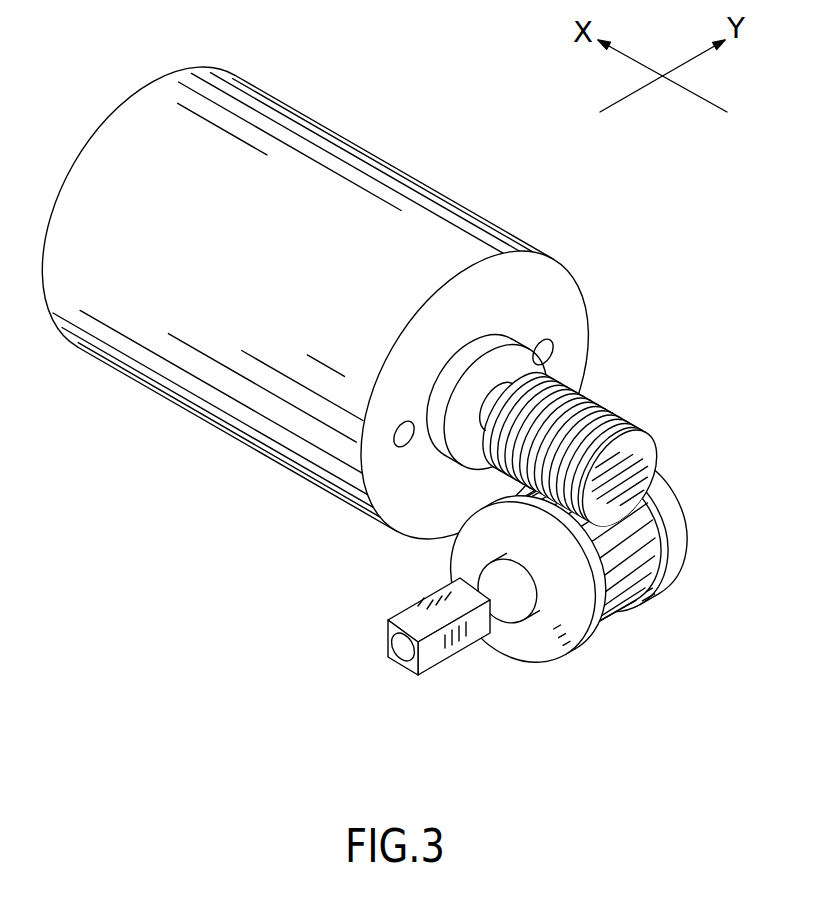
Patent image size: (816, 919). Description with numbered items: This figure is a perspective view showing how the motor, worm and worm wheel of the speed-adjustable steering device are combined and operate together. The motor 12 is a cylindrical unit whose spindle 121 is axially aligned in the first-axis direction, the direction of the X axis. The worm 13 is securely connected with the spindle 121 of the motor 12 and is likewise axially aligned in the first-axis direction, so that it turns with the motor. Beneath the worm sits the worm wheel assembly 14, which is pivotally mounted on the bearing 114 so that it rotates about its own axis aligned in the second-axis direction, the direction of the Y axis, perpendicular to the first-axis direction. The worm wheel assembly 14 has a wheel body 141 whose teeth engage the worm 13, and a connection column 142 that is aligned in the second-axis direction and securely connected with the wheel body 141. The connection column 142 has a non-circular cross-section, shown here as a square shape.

The motor 12 is at (548, 298).
The spindle 121 is at (497, 392).
The worm 13 is at (595, 405).
The worm wheel assembly 14 is at (577, 562).
The bearing 114 is at (677, 547).
The wheel body 141 is at (628, 587).
The connection column 142 is at (445, 648).